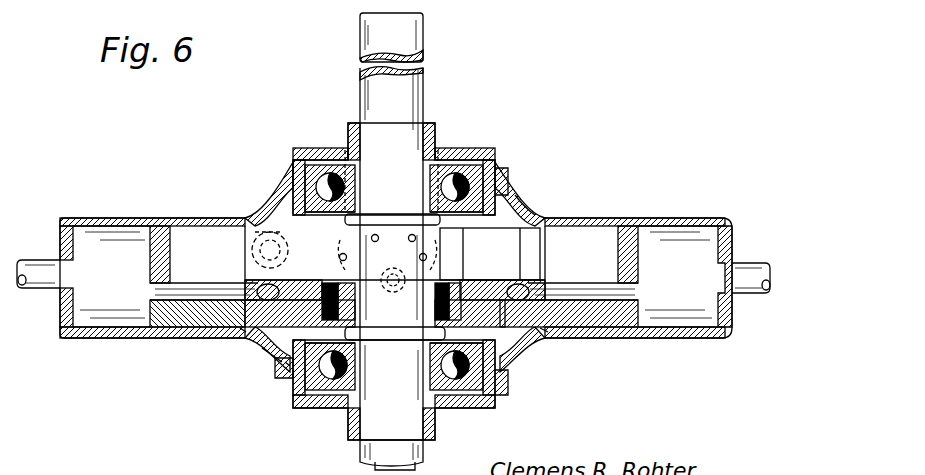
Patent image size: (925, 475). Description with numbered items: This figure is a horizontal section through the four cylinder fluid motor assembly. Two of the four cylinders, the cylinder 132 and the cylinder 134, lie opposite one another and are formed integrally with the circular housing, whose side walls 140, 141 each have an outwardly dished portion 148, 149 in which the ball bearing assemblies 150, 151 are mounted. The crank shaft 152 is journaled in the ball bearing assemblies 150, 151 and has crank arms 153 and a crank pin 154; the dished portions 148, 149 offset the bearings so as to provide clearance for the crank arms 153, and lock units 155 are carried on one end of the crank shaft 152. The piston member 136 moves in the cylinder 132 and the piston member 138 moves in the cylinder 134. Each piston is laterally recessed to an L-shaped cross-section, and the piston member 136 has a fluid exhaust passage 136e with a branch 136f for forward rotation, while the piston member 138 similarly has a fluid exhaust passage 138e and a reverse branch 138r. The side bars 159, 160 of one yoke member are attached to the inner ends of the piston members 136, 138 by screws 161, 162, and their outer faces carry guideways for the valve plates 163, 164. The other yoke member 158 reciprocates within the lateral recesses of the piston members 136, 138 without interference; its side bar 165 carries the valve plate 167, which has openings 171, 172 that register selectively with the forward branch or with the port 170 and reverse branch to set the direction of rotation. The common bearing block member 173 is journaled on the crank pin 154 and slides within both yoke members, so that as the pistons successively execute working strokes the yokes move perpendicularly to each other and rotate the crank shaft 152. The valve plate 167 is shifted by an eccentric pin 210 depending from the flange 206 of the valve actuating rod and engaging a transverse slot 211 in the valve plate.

The cylinder 132 is at (676, 218).
The cylinder 134 is at (100, 218).
The piston member 136 is at (608, 330).
The fluid exhaust passage 136e is at (640, 322).
The fluid exhaust branch 136f is at (555, 344).
The piston member 138 is at (198, 350).
The fluid exhaust passage 138e is at (182, 332).
The fluid exhaust branch 138r is at (250, 332).
The housing side wall 140 is at (305, 215).
The housing side wall 141 is at (508, 375).
The dished portion 148 is at (508, 175).
The dished portion 149 is at (282, 352).
The ball bearing assembly 150 is at (472, 150).
The ball bearing assembly 151 is at (300, 408).
The crank shaft 152 is at (362, 88).
The crank arms 153 is at (495, 398).
The crank pin 154 is at (290, 380).
The lock units 155 is at (440, 445).
The yoke member 158 is at (540, 200).
The side bar 159 is at (495, 290).
The side bar 160 is at (335, 395).
The screw 161 is at (395, 281).
The screw 162 is at (287, 364).
The valve plate 163 is at (535, 358).
The valve plate 164 is at (252, 345).
The side bar 165 is at (535, 245).
The valve plate 167 is at (295, 160).
The port 170 is at (345, 130).
The opening 171 is at (405, 140).
The opening 172 is at (350, 150).
The common bearing block member 173 is at (395, 345).
The flange 206 is at (245, 217).
The eccentric pin 210 is at (250, 268).
The transverse slot 211 is at (250, 252).